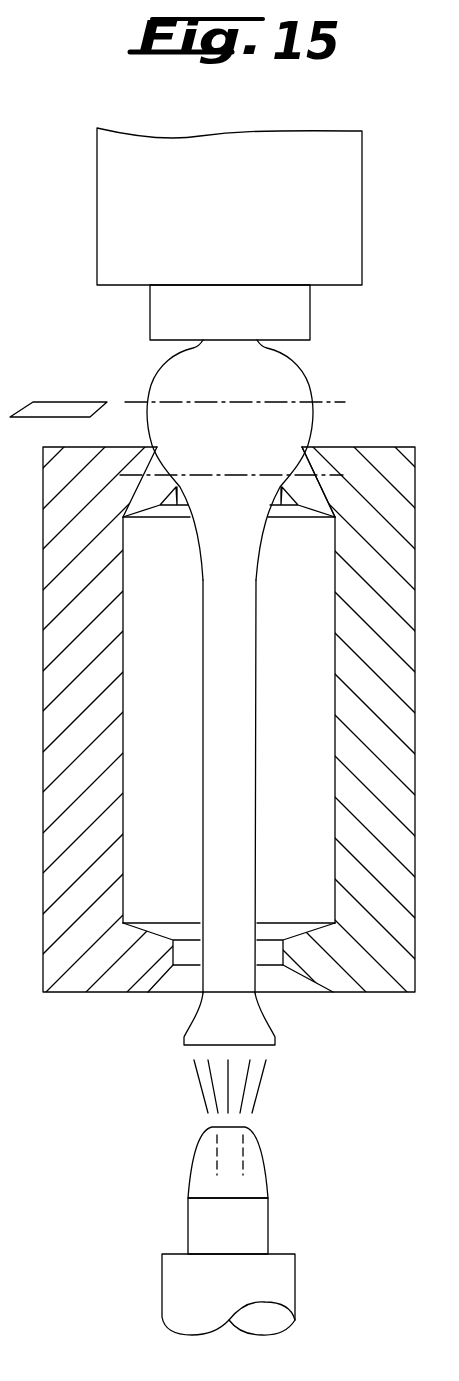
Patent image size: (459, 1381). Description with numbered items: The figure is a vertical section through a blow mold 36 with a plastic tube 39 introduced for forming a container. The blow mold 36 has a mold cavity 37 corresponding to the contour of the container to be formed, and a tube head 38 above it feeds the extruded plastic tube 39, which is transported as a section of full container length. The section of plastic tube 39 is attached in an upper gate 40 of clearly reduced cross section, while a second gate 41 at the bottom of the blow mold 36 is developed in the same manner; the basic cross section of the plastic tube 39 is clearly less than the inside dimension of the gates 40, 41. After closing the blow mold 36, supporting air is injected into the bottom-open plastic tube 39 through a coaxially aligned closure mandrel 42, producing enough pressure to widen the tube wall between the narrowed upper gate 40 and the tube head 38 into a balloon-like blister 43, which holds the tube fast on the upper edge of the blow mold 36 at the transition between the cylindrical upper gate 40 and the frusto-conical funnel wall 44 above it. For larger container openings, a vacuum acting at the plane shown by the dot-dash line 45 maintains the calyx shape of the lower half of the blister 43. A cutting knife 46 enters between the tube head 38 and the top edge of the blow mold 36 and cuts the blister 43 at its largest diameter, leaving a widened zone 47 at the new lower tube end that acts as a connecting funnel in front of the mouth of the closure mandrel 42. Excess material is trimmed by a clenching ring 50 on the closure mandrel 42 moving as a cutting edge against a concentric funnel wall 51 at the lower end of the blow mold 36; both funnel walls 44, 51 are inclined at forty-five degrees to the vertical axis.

The blow mold 36 is at (40, 925).
The mold cavity 37 is at (377, 940).
The tube head 38 is at (97, 213).
The plastic tube 39 is at (203, 745).
The upper gate 40 is at (168, 507).
The second gate 41 is at (173, 952).
The closure mandrel 42 is at (240, 1233).
The balloon-like blister 43 is at (157, 365).
The funnel wall 44 is at (303, 475).
The vacuum plane 45 is at (340, 476).
The cutting knife 46 is at (48, 406).
The widened zone 47 is at (184, 1037).
The clenching ring 50 is at (297, 1253).
The funnel wall 51 is at (293, 977).